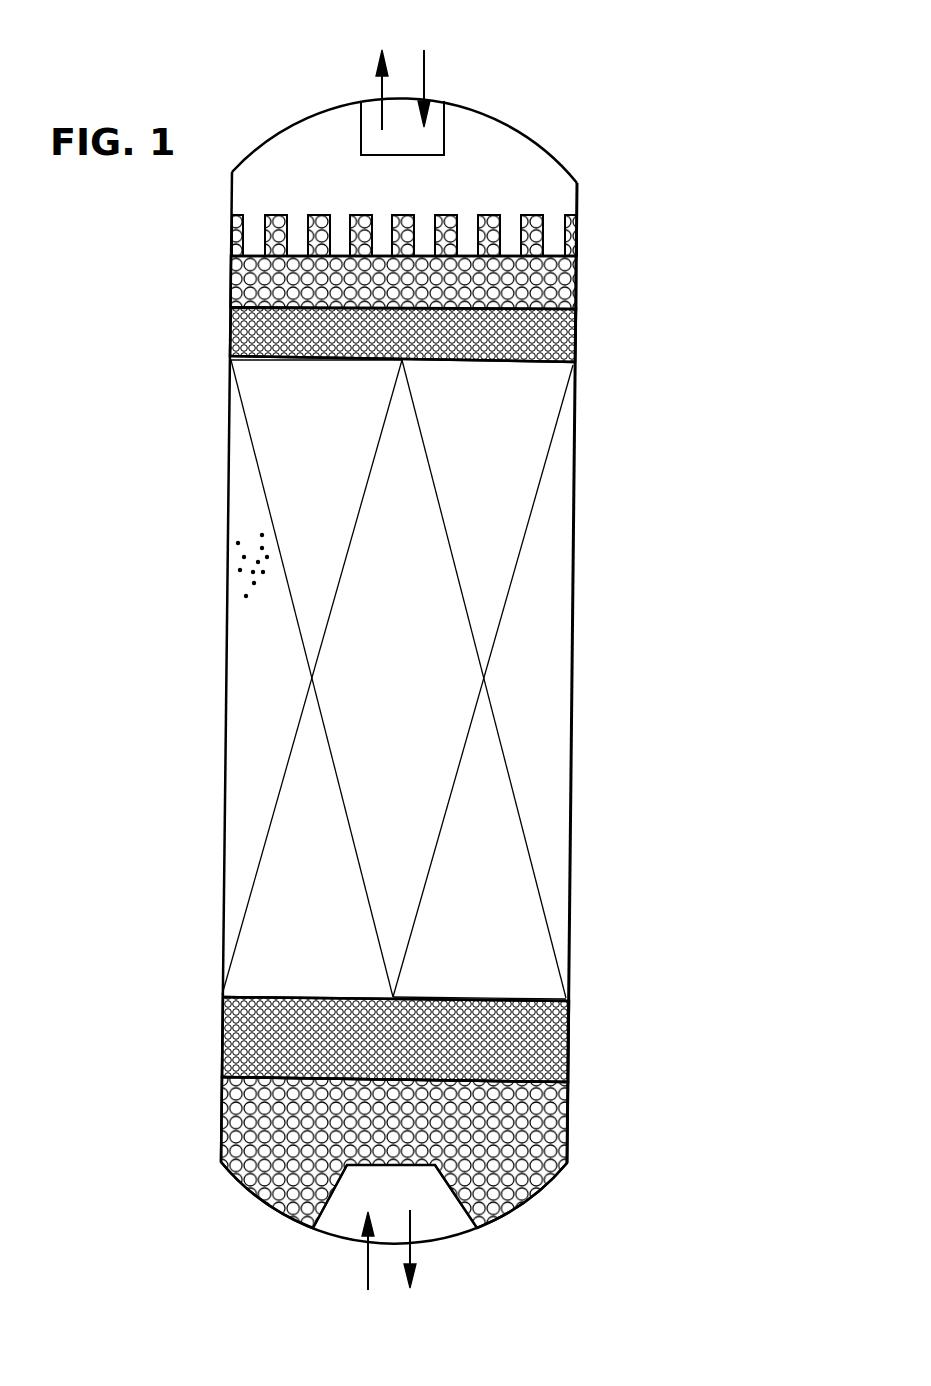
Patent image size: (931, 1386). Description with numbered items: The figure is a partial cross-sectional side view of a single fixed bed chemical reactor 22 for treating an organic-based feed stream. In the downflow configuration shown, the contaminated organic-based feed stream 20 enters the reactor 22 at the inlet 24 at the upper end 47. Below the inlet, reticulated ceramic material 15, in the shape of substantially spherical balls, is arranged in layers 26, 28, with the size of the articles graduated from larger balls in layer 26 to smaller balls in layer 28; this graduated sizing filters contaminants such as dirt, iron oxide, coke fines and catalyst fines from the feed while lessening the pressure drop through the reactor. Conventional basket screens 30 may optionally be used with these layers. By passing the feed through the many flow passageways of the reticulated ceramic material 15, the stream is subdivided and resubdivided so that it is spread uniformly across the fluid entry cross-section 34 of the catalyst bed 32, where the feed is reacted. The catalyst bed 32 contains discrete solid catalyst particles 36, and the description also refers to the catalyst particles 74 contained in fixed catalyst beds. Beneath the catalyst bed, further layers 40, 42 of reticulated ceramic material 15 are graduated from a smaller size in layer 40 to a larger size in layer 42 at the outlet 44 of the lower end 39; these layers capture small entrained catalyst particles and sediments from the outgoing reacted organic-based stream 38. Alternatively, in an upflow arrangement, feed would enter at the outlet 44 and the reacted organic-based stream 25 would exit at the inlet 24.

The reticulated ceramic material 15 is at (578, 267).
The contaminated organic-based feed stream 20 is at (427, 83).
The single fixed bed chemical reactor 22 is at (550, 147).
The inlet 24 is at (385, 148).
The reacted organic-based stream 25 is at (380, 90).
The layer of reticulated ceramic material 26 is at (250, 270).
The layer of reticulated ceramic material 28 is at (250, 329).
The basket screens 30 is at (549, 221).
The catalyst bed 32 is at (493, 545).
The fluid entry cross-section 34 is at (298, 365).
The catalyst particles 36 is at (240, 571).
The reacted organic-based stream 38 is at (410, 1227).
The lower end 39 is at (583, 1006).
The layer of reticulated ceramic material 40 is at (560, 1048).
The layer of reticulated ceramic material 42 is at (553, 1130).
The outlet 44 is at (350, 1204).
The upper end 47 is at (452, 62).
The catalyst particles 74 is at (367, 1263).